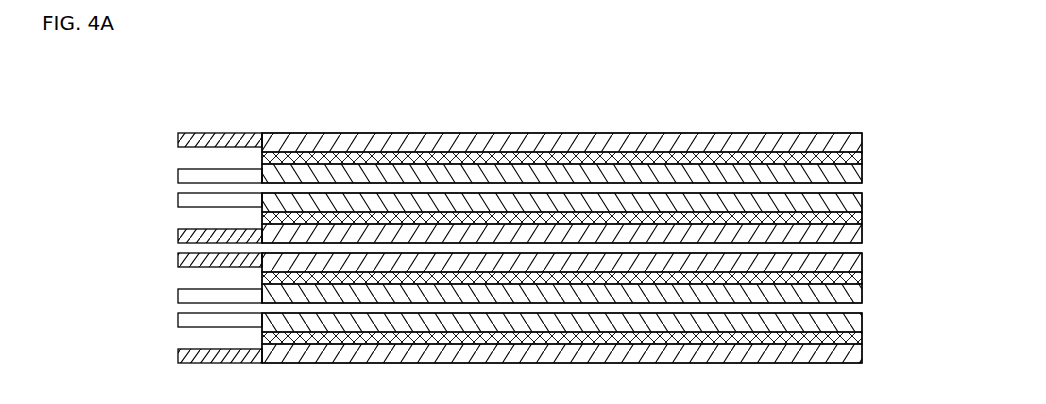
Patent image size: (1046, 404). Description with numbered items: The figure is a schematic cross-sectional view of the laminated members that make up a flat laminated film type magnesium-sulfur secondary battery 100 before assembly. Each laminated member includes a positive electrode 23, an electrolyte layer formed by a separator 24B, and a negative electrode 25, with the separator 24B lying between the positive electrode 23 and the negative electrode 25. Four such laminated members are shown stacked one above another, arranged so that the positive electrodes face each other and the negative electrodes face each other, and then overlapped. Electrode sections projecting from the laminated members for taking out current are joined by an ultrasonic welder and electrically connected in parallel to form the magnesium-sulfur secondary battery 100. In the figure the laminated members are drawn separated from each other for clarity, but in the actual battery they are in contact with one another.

The magnesium-sulfur secondary battery 100 is at (380, 104).
The positive electrode 23 is at (568, 144).
The separator 24B is at (676, 160).
The negative electrode 25 is at (796, 173).